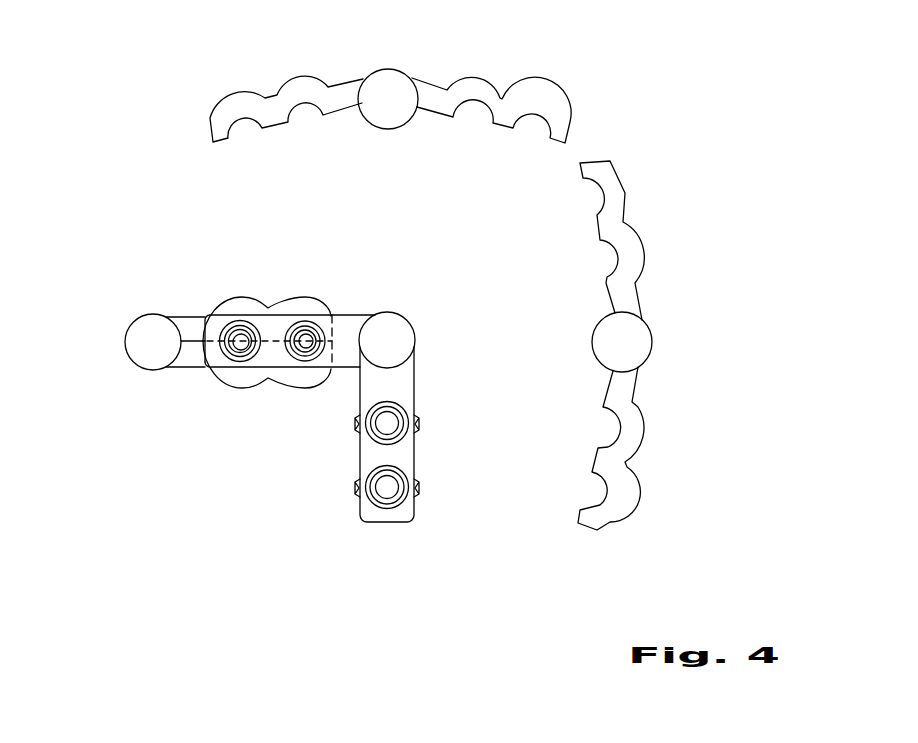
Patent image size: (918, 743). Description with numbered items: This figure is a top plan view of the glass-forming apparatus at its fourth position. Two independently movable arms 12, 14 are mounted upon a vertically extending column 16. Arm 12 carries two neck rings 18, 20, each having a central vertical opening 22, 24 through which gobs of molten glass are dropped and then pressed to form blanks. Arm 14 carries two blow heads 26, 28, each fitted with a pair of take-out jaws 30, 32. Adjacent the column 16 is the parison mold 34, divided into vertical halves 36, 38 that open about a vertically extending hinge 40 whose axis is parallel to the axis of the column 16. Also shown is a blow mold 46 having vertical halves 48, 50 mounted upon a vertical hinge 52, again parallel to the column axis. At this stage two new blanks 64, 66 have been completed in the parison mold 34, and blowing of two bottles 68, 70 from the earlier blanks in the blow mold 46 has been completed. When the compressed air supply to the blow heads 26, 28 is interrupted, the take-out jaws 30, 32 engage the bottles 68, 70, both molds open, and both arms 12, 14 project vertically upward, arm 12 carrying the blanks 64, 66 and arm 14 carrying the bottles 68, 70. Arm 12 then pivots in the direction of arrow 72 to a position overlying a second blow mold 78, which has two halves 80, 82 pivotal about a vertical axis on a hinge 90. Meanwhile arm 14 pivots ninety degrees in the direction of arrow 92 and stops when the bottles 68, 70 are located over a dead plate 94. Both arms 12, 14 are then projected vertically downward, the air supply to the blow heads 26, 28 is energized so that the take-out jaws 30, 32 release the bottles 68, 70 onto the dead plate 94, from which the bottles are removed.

The arm 12 is at (217, 322).
The arm 14 is at (377, 545).
The column 16 is at (398, 341).
The neck ring 18 is at (237, 330).
The neck ring 20 is at (322, 318).
The central vertical opening 22 is at (242, 347).
The central vertical opening 24 is at (303, 337).
The blow head 26 is at (402, 482).
The blow head 28 is at (398, 412).
The take-out jaws 30 is at (422, 493).
The take-out jaws 32 is at (420, 425).
The parison mold 34 is at (428, 60).
The vertical half 36 is at (300, 87).
The vertical half 38 is at (488, 87).
The hinge 40 is at (375, 101).
The blow mold 46 is at (680, 335).
The vertical half 48 is at (628, 293).
The vertical half 50 is at (633, 425).
The hinge 52 is at (637, 343).
The blank 64 is at (229, 347).
The blank 66 is at (305, 347).
The bottle 68 is at (388, 493).
The bottle 70 is at (387, 425).
The arrow 72 is at (283, 175).
The second blow mold 78 is at (118, 390).
The half 80 is at (185, 358).
The half 82 is at (187, 320).
The hinge 90 is at (131, 338).
The arrow 92 is at (555, 438).
The dead plate 94 is at (367, 639).